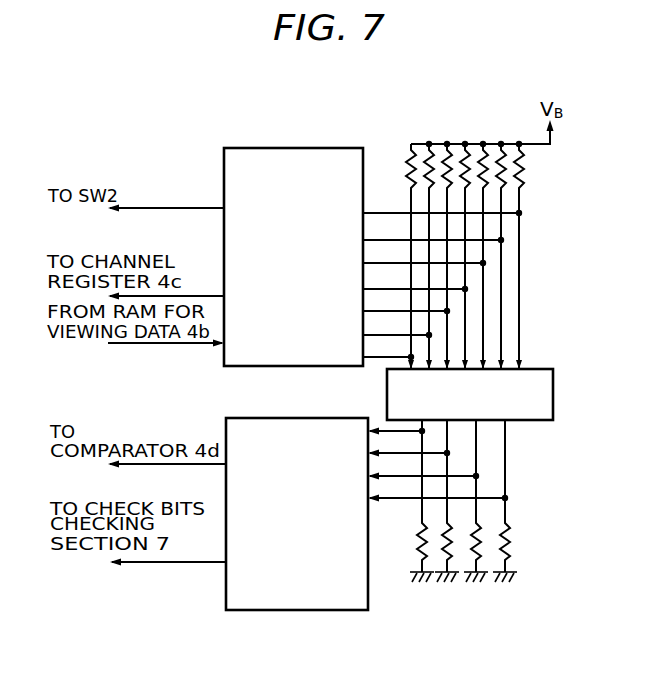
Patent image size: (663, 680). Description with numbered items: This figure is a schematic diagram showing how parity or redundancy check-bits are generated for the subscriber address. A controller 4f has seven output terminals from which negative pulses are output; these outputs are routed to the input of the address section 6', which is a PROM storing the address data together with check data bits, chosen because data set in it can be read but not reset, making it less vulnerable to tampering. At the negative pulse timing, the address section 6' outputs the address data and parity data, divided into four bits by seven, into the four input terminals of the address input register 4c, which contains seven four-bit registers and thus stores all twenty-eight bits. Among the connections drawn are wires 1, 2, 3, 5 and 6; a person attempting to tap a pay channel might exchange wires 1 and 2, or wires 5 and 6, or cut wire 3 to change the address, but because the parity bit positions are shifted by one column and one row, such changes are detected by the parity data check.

The controller 4f is at (283, 148).
The address input register 4c is at (330, 610).
The address section 6' is at (492, 394).
The wire 1 is at (519, 273).
The wire 2 is at (501, 318).
The wire 3 is at (447, 432).
The wire 5 is at (407, 478).
The wire 6 is at (436, 569).